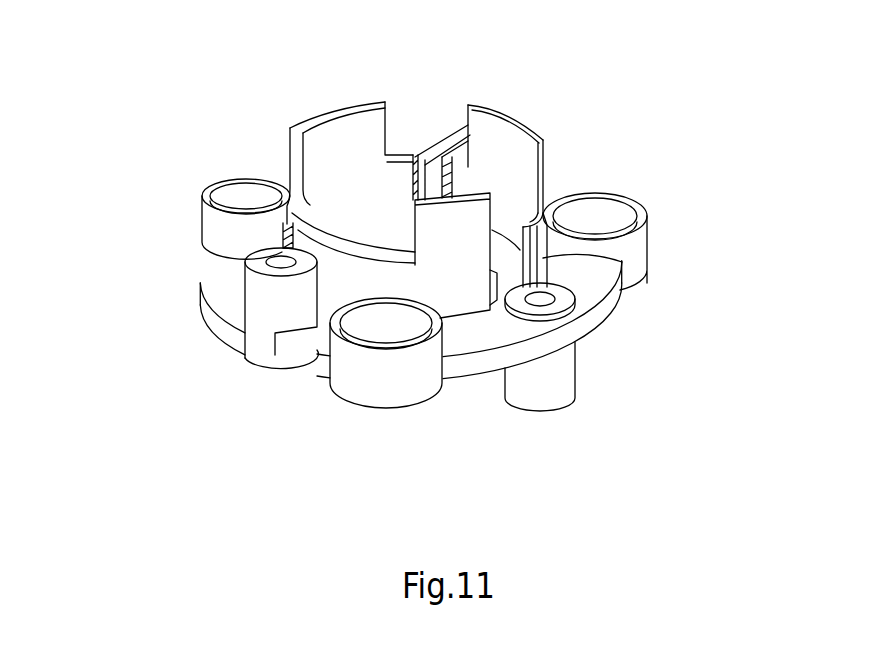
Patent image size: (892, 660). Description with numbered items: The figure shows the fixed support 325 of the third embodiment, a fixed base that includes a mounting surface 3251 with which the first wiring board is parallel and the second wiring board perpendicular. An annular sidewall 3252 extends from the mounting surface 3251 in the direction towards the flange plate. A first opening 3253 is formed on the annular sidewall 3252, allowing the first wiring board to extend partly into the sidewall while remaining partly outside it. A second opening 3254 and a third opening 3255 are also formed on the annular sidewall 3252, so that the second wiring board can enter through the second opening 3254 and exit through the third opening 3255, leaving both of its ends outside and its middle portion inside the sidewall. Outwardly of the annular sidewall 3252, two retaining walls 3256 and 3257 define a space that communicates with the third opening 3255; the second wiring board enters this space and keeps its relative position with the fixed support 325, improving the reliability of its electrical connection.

The fixed support 325 is at (434, 243).
The mounting surface 3251 is at (227, 272).
The annular sidewall 3252 is at (383, 277).
The first opening 3253 is at (517, 262).
The second opening 3254 is at (280, 243).
The third opening 3255 is at (427, 177).
The retaining wall 3256 is at (454, 112).
The retaining wall 3257 is at (470, 150).